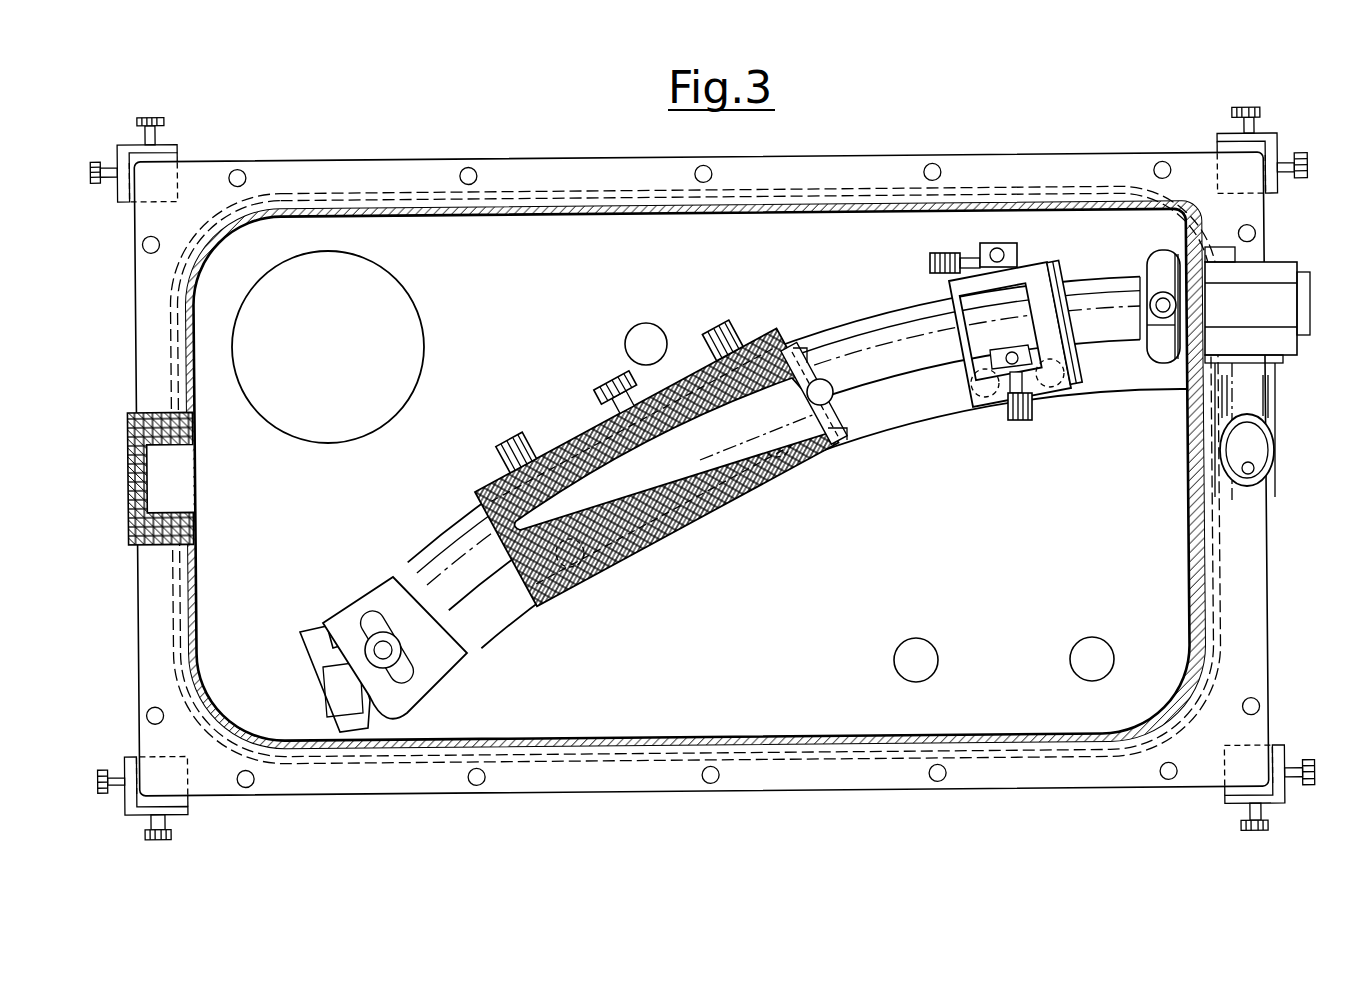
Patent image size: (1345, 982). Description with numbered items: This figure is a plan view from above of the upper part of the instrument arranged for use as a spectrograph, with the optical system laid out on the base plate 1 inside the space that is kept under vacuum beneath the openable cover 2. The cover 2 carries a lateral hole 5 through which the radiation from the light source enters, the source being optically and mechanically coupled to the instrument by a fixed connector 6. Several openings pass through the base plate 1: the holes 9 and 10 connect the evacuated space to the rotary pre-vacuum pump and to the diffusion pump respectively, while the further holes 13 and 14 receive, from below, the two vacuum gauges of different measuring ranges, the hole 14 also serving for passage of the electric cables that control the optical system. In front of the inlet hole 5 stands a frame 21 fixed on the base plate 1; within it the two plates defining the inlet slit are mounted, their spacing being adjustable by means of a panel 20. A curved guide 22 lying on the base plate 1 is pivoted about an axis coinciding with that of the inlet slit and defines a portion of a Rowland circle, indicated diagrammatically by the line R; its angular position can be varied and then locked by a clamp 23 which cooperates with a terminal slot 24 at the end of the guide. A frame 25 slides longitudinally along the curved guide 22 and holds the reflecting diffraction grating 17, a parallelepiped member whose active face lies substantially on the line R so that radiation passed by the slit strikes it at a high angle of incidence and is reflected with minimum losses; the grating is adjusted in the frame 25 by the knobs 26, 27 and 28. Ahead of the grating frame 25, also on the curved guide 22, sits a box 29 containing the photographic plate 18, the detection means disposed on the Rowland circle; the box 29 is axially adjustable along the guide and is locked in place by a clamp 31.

The base plate 1 is at (781, 712).
The openable cover 2 is at (651, 737).
The lateral hole 5 is at (1210, 327).
The fixed connector 6 is at (1273, 268).
The hole 9 is at (652, 324).
The hole 10 is at (410, 298).
The hole 13 is at (1106, 641).
The hole 14 is at (931, 642).
The reflecting diffraction grating 17 is at (954, 358).
The photographic plate 18 is at (657, 435).
The panel 20 is at (1158, 296).
The frame 21 is at (1166, 352).
The curved guide 22 is at (856, 312).
The clamp 23 is at (381, 637).
The terminal slot 24 is at (408, 690).
The frame 25 is at (1066, 270).
The knob 26 is at (1023, 420).
The knob 27 is at (1000, 252).
The knob 28 is at (935, 257).
The box 29 is at (658, 528).
The clamp 31 is at (605, 387).